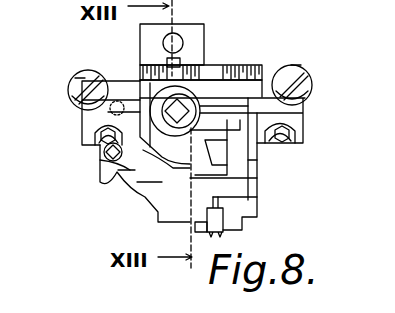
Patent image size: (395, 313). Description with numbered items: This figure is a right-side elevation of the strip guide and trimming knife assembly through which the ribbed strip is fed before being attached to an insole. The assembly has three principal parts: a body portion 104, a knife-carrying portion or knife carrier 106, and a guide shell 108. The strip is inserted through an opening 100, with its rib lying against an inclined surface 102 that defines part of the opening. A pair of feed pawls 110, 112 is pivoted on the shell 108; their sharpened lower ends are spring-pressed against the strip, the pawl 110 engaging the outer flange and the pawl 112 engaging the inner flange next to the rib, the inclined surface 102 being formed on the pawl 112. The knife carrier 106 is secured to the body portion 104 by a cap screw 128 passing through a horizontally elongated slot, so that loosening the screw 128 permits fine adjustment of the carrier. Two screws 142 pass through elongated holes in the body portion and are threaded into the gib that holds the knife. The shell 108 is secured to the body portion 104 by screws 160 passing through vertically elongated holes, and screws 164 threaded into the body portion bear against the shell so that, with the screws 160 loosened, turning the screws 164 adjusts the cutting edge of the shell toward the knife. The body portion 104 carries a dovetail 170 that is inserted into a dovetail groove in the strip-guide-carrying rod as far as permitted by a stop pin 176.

The opening 100 is at (181, 184).
The inclined surface 102 is at (238, 147).
The body portion 104 is at (281, 68).
The knife carrier 106 is at (120, 170).
The guide shell 108 is at (254, 213).
The feed pawl 110 is at (223, 157).
The feed pawl 112 is at (248, 163).
The cap screw 128 is at (172, 108).
The screws 142 is at (102, 158).
The screws 160 is at (100, 137).
The screws 164 is at (73, 88).
The dovetail 170 is at (223, 73).
The stop pin 176 is at (183, 63).